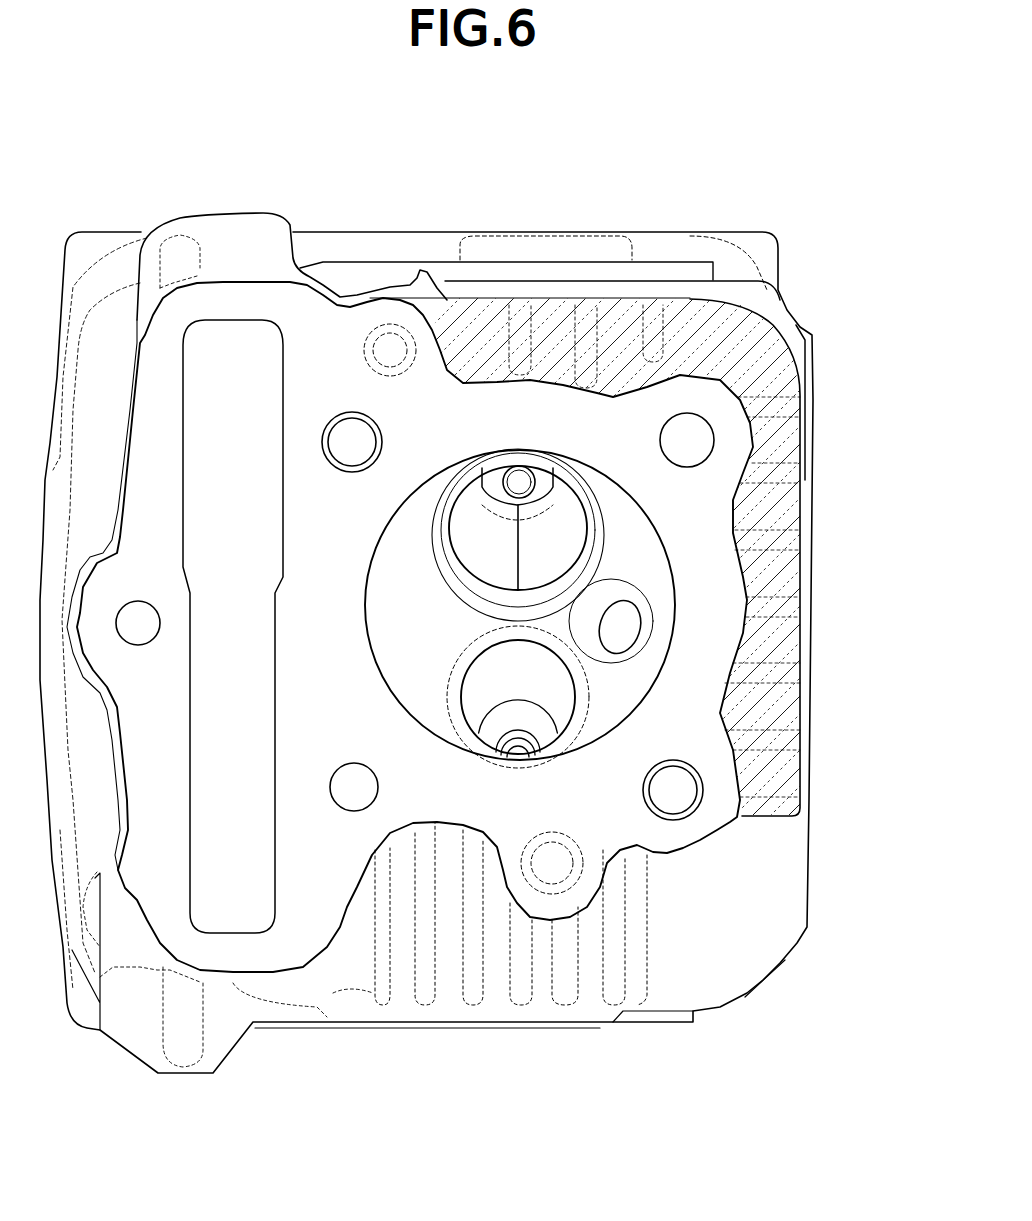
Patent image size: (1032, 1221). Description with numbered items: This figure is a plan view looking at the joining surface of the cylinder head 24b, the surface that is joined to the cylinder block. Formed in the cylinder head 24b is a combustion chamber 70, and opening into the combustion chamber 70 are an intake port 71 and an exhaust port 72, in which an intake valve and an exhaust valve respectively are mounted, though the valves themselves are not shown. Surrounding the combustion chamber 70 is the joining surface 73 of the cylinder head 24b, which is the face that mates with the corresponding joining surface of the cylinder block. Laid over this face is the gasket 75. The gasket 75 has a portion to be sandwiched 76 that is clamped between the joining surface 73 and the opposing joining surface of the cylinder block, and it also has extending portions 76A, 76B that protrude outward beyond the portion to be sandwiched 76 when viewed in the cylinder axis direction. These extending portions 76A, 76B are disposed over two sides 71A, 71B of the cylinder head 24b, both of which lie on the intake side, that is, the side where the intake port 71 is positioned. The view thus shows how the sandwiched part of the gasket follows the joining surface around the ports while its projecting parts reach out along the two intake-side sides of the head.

The cylinder head 24b is at (295, 185).
The combustion chamber 70 is at (410, 628).
The intake port 71 is at (473, 530).
The side 71A is at (634, 297).
The side 71B is at (813, 432).
The exhaust port 72 is at (480, 707).
The joining surface 73 is at (697, 562).
The gasket 75 is at (553, 343).
The portion to be sandwiched 76 is at (713, 617).
The extending portion 76A is at (473, 328).
The extending portion 76B is at (760, 508).